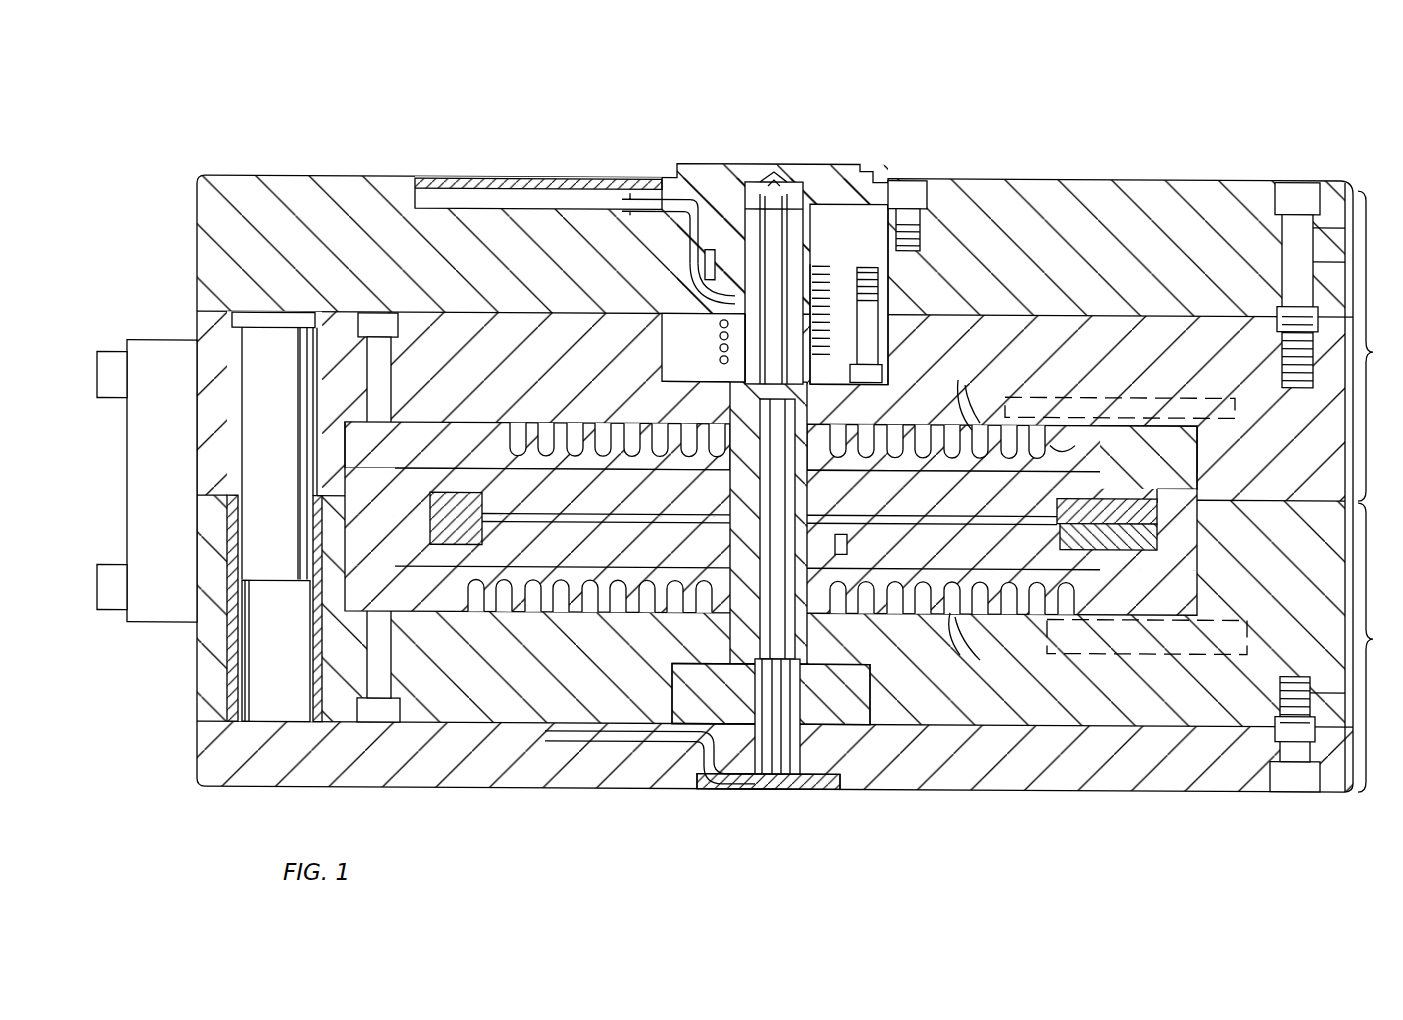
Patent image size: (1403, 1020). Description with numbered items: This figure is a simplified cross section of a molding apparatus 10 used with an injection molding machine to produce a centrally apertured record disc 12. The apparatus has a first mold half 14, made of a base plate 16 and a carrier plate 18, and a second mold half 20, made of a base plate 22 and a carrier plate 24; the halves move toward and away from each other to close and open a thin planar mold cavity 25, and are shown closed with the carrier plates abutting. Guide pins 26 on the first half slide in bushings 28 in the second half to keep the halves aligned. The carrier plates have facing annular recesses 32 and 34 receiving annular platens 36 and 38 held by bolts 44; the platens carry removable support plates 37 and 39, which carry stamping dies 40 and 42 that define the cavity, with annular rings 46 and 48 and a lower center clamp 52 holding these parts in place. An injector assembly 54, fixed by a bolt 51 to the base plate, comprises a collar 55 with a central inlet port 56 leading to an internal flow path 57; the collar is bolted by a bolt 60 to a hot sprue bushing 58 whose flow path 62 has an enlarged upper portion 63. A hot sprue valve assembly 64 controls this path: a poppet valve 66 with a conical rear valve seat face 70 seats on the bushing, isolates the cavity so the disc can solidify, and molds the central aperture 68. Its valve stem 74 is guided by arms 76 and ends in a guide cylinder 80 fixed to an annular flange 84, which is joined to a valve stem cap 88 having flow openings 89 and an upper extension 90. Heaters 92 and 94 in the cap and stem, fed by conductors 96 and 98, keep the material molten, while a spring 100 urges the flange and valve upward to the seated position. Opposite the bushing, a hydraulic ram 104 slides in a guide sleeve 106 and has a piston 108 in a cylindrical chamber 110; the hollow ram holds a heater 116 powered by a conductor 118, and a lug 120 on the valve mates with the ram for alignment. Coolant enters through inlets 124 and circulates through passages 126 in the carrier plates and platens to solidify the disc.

The molding apparatus 10 is at (283, 118).
The record disc 12 is at (948, 520).
The first mold half 14 is at (1378, 346).
The base plate 16 is at (1138, 193).
The carrier plate 18 is at (1146, 345).
The second mold half 20 is at (1378, 647).
The base plate 22 is at (1172, 782).
The carrier plate 24 is at (1062, 722).
The mold cavity 25 is at (998, 514).
The guide pins 26 is at (252, 428).
The bushings 28 is at (232, 655).
The annular plate-shaped recess 32 is at (1130, 436).
The annular plate-shaped recess 34 is at (1185, 610).
The annular platen 36 is at (1185, 455).
The removable support plate 37 is at (1060, 472).
The annular platen 38 is at (1180, 553).
The removable support plate 39 is at (1080, 560).
The stamping die 40 is at (882, 520).
The stamping die 42 is at (852, 532).
The bolts 44 is at (385, 380).
The annular ring 46 is at (1160, 500).
The annular ring 48 is at (1152, 537).
The bolt 51 is at (912, 193).
The lower center clamp 52 is at (700, 524).
The injector assembly 54 is at (843, 188).
The collar 55 is at (688, 170).
The central inlet port 56 is at (775, 180).
The internal flow path 57 is at (806, 228).
The hot sprue bushing 58 is at (882, 372).
The bolt 60 is at (870, 303).
The internal flow path 62 is at (760, 404).
The enlarged portion 63 is at (696, 362).
The hot sprue valve assembly 64 is at (696, 339).
The poppet valve 66 is at (802, 506).
The central aperture 68 is at (728, 503).
The rear valve seat face 70 is at (755, 503).
The valve stem 74 is at (812, 419).
The arms 76 is at (802, 482).
The guide cylinder 80 is at (854, 373).
The annular flange 84 is at (677, 305).
The valve stem cap 88 is at (722, 265).
The flow openings 89 is at (806, 253).
The upper extension 90 is at (755, 203).
The heater 92 is at (802, 203).
The heater 94 is at (722, 423).
The conductor 96 is at (635, 198).
The conductor 98 is at (625, 210).
The spring 100 is at (852, 334).
The hydraulic ram 104 is at (800, 649).
The guide sleeve 106 is at (735, 649).
The piston 108 is at (832, 694).
The cylindrical chamber 110 is at (858, 732).
The heater 116 is at (722, 669).
The conductor 118 is at (592, 731).
The lug 120 is at (745, 538).
The inlets 124 is at (1242, 408).
The coolant fluid flow passages 126 is at (980, 509).